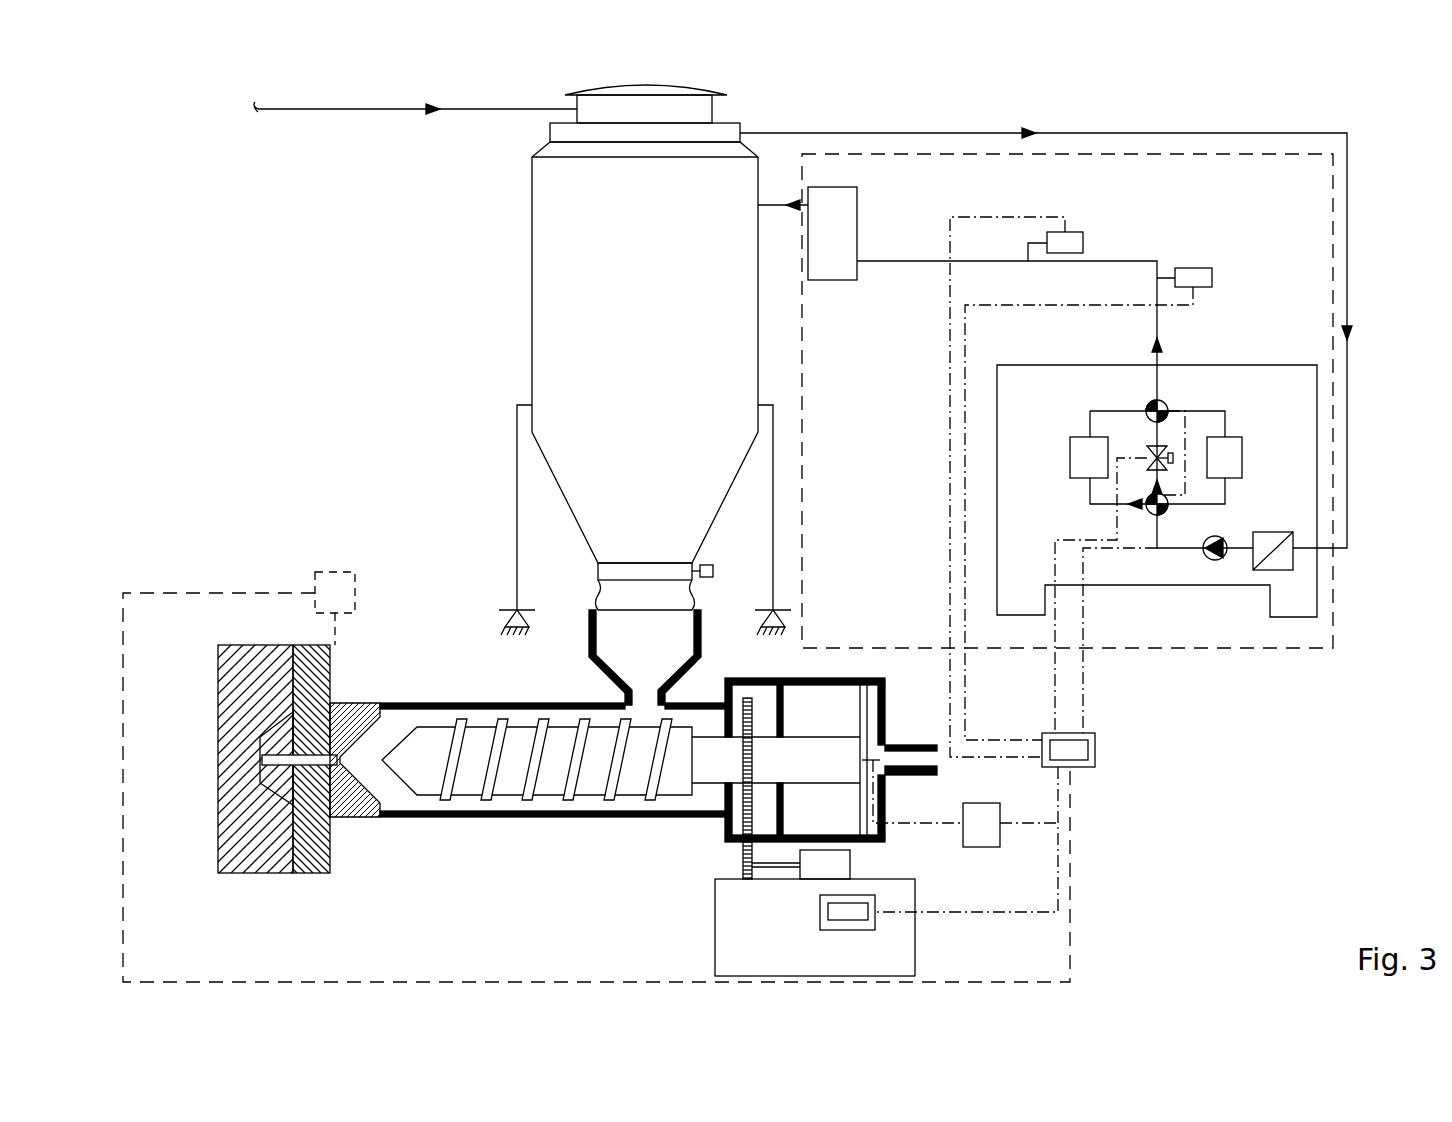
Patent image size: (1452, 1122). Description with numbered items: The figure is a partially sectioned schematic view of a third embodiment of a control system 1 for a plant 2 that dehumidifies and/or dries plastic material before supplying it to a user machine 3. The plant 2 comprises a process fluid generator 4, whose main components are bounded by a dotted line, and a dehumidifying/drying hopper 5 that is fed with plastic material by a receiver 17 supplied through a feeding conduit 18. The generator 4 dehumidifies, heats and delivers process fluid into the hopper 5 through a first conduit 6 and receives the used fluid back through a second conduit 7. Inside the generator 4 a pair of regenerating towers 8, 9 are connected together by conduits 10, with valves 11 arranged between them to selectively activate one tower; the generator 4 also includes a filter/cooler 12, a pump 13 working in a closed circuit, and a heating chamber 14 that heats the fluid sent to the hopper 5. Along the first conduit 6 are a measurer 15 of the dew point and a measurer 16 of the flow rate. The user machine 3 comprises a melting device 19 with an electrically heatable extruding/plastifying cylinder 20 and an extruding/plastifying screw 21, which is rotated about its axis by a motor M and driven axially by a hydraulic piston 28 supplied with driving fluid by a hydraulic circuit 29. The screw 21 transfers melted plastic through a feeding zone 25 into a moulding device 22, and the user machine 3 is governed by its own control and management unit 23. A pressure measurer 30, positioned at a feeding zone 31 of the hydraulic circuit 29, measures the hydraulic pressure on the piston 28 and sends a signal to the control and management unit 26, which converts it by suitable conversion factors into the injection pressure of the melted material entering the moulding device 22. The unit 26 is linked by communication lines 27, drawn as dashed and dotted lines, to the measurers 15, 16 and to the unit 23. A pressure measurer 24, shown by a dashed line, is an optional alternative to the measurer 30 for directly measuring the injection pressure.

The control system 1 is at (175, 130).
The dehumidifying and/or drying plant 2 is at (1352, 125).
The user machine 3 is at (503, 670).
The process fluid generator 4 is at (1232, 658).
The dehumidifying/drying hopper 5 is at (633, 325).
The first conduit 6 is at (768, 205).
The second conduit 7 is at (1098, 133).
The regenerating tower 8 is at (1079, 474).
The regenerating tower 9 is at (1215, 474).
The conduits 10 is at (1113, 411).
The valves 11 is at (1162, 400).
The filter/cooler 12 is at (1293, 562).
The pump 13 is at (1208, 557).
The heating chamber 14 is at (815, 252).
The dew point measurer 15 is at (1207, 268).
The flow rate measurer 16 is at (1083, 232).
The receiver 17 is at (714, 112).
The feeding conduit 18 is at (357, 109).
The melting device 19 is at (582, 852).
The extruding/plastifying cylinder 20 is at (432, 703).
The extruding/plastifying screw 21 is at (548, 800).
The moulding device 22 is at (275, 887).
The control and management unit 23 is at (848, 930).
The pressure measurer 24 is at (355, 572).
The feeding zone 25 is at (353, 763).
The control and management unit 26 is at (1095, 737).
The communication lines 27 is at (948, 448).
The hydraulic piston 28 is at (863, 690).
The hydraulic circuit 29 is at (895, 750).
The pressure measurer 30 is at (982, 847).
The feeding zone 31 is at (880, 762).
The motor M is at (852, 862).